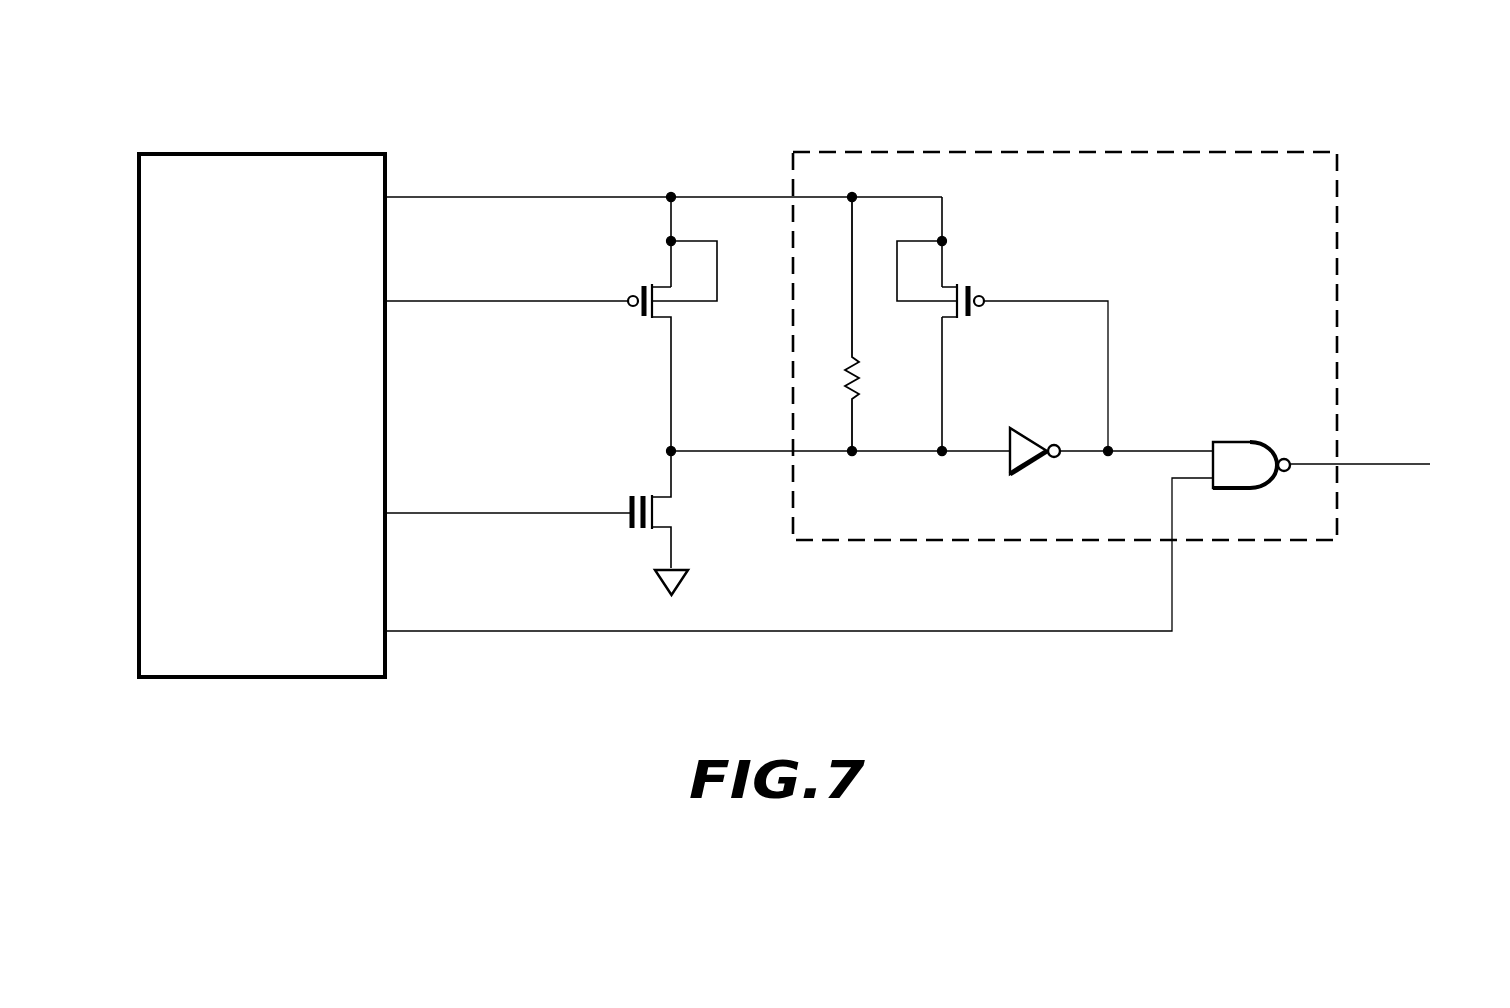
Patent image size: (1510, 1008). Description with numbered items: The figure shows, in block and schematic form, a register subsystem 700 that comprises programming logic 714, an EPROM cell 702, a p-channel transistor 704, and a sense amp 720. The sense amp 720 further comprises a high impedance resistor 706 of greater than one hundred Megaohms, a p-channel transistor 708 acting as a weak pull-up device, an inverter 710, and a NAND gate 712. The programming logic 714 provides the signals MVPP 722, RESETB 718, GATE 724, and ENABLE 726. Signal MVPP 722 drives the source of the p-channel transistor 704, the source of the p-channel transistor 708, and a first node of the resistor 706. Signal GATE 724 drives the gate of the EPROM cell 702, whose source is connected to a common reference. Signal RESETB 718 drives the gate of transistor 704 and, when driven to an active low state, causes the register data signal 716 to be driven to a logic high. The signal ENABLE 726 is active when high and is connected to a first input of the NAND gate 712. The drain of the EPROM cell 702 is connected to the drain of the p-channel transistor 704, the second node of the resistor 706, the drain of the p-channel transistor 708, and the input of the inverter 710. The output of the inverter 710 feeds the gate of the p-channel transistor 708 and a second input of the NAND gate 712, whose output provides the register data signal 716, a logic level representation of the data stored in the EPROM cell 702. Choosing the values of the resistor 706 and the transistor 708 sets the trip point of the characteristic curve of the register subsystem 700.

The register subsystem 700 is at (1123, 88).
The EPROM cell 702 is at (630, 497).
The p-channel transistor 704 is at (642, 319).
The high impedance resistor 706 is at (861, 371).
The p-channel transistor 708 is at (971, 293).
The inverter 710 is at (1031, 468).
The NAND gate 712 is at (1240, 441).
The programming logic 714 is at (342, 498).
The register data signal 716 is at (1378, 463).
The RESETB signal 718 is at (506, 268).
The sense amp 720 is at (1295, 253).
The MVPP signal 722 is at (663, 169).
The GATE signal 724 is at (507, 467).
The ENABLE signal 726 is at (799, 554).